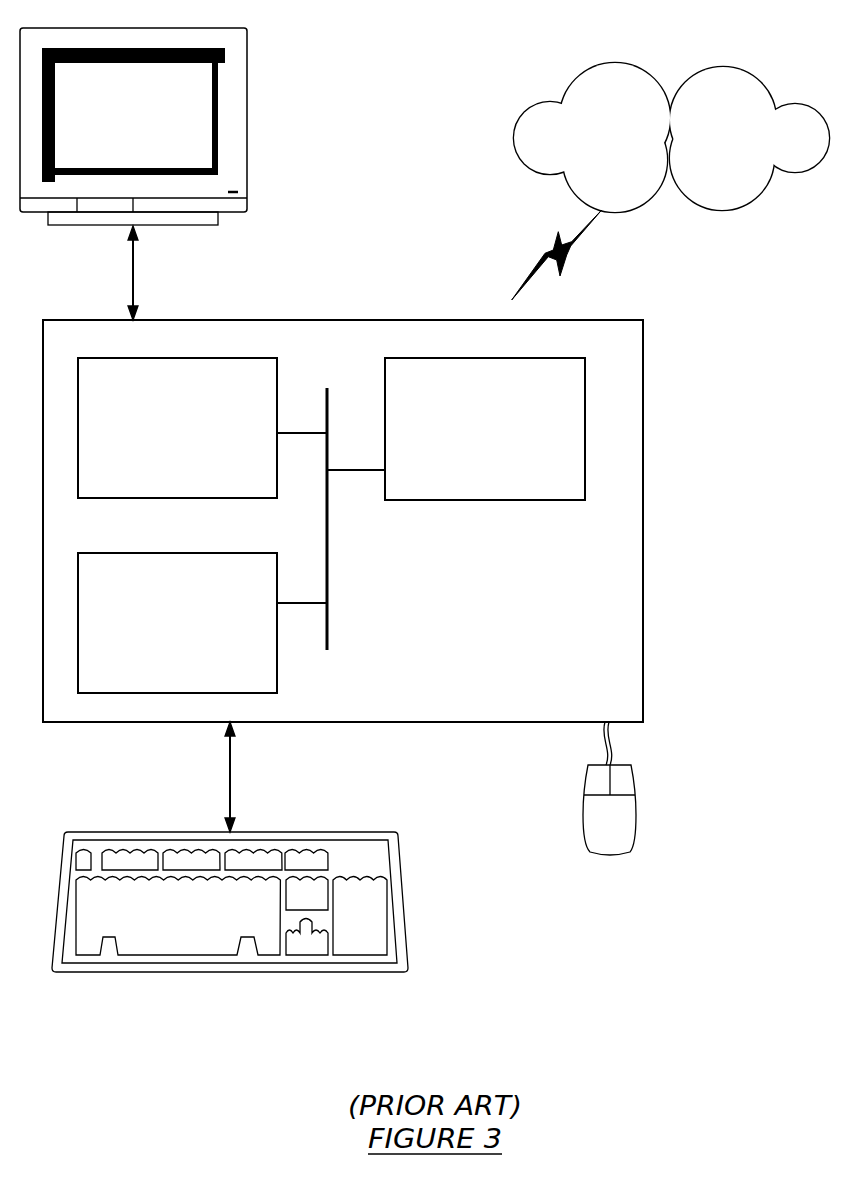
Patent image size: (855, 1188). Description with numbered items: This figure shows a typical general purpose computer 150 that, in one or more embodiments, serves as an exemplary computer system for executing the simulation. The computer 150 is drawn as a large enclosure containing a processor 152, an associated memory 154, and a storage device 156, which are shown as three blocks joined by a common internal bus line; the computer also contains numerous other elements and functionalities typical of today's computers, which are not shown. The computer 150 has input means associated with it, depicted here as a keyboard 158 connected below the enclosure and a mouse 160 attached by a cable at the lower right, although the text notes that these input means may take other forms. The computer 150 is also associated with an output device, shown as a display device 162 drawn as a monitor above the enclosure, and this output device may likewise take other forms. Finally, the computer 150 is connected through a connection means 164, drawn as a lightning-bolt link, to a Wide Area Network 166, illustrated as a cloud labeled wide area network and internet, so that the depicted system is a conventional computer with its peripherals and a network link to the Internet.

The general purpose computer 150 is at (672, 459).
The processor 152 is at (479, 442).
The memory 154 is at (157, 440).
The storage device 156 is at (157, 635).
The keyboard 158 is at (139, 923).
The mouse 160 is at (589, 833).
The display device 162 is at (112, 133).
The connection means 164 is at (552, 245).
The Wide Area Network 166 is at (712, 63).